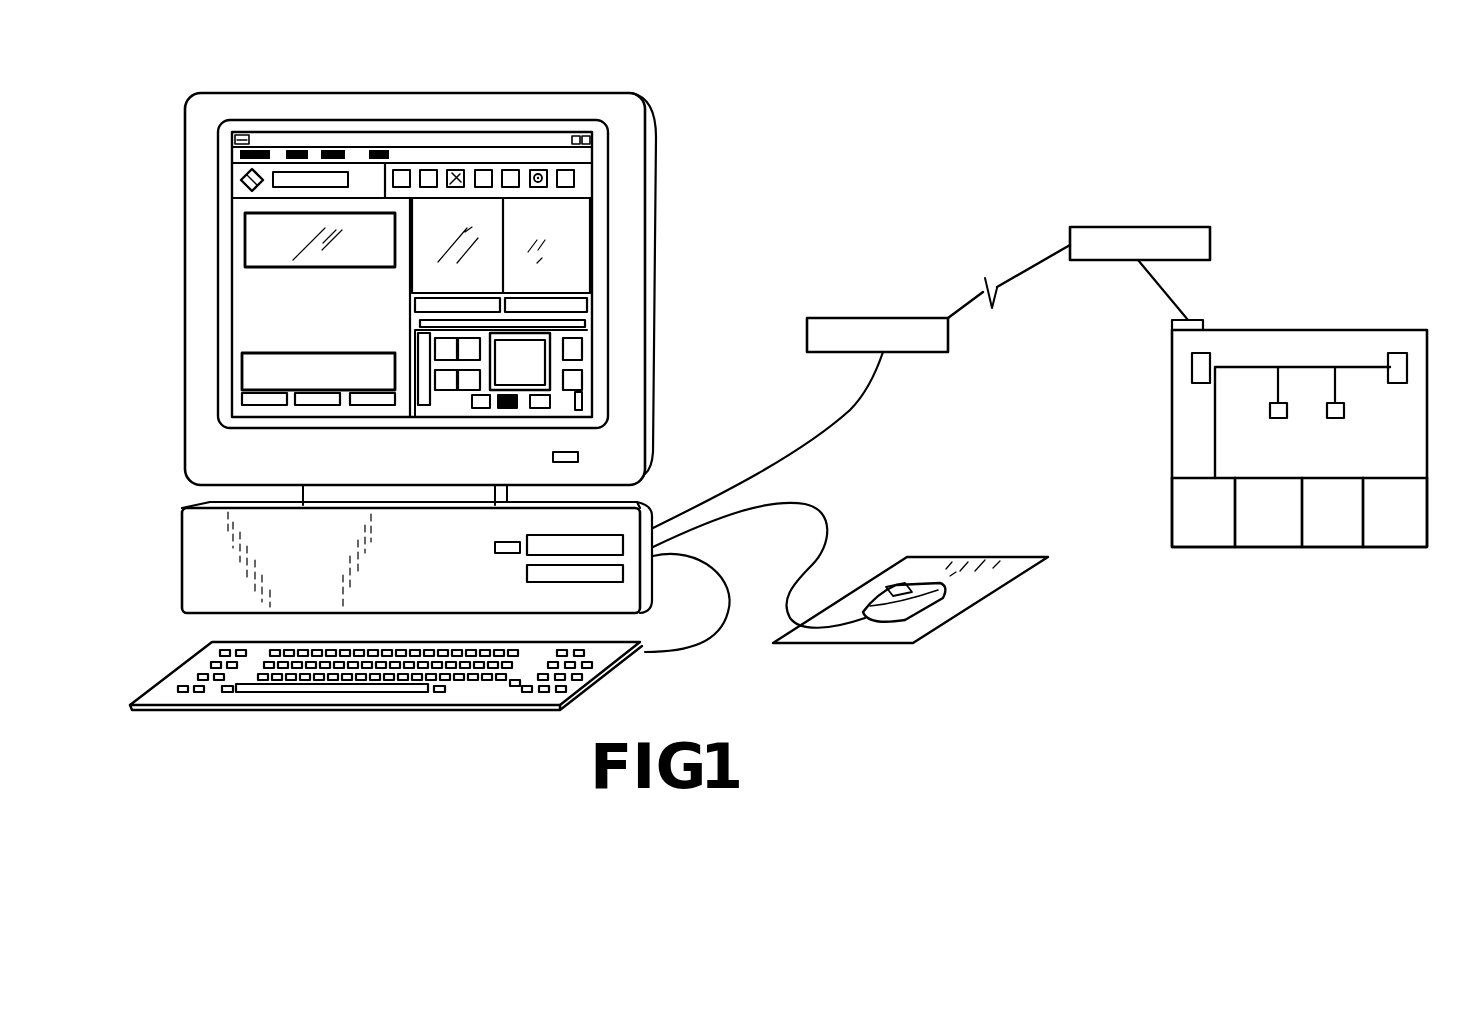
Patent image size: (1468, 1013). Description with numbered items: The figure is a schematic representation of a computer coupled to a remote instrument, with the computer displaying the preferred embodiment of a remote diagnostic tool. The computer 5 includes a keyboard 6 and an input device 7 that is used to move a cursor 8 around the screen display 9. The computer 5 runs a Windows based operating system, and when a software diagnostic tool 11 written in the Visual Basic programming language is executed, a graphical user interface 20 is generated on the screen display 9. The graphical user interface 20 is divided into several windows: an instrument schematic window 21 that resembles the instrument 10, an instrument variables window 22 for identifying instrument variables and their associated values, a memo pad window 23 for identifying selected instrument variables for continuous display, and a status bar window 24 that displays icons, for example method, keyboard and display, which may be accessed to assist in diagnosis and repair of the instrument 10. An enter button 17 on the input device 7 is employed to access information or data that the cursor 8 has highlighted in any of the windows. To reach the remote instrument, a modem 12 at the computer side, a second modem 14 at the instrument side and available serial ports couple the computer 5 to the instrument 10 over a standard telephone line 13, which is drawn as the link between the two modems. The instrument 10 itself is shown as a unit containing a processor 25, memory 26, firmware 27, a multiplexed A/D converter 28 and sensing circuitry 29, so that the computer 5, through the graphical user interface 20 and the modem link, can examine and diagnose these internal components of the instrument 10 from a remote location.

The computer 5 is at (658, 573).
The keyboard 6 is at (630, 655).
The input device 7 is at (862, 612).
The cursor 8 is at (510, 415).
The screen display 9 is at (613, 93).
The instrument 10 is at (1383, 330).
The software diagnostic tool 11 is at (605, 535).
The modem 12 is at (923, 352).
The telephone line 13 is at (1002, 292).
The modem 14 is at (1183, 227).
The enter button 17 is at (933, 583).
The graphical user interface 20 is at (593, 260).
The instrument schematic window 21 is at (583, 323).
The instrument variables window 22 is at (568, 227).
The memo pad window 23 is at (277, 245).
The status bar window 24 is at (365, 177).
The processor 25 is at (1190, 528).
The memory 26 is at (1270, 528).
The firmware 27 is at (1337, 528).
The multiplexed A/D converter 28 is at (1422, 512).
The sensing circuitry 29 is at (1208, 415).